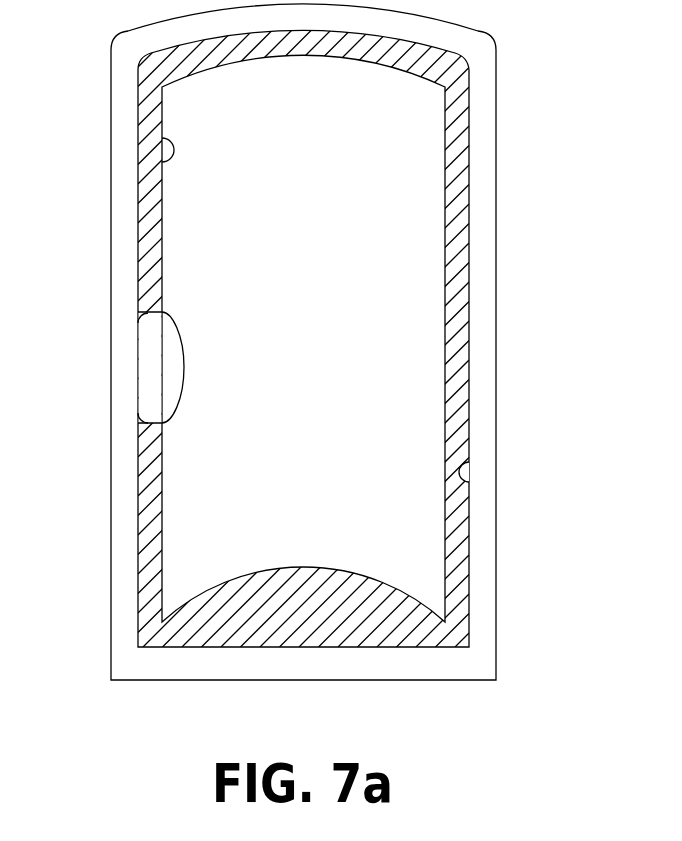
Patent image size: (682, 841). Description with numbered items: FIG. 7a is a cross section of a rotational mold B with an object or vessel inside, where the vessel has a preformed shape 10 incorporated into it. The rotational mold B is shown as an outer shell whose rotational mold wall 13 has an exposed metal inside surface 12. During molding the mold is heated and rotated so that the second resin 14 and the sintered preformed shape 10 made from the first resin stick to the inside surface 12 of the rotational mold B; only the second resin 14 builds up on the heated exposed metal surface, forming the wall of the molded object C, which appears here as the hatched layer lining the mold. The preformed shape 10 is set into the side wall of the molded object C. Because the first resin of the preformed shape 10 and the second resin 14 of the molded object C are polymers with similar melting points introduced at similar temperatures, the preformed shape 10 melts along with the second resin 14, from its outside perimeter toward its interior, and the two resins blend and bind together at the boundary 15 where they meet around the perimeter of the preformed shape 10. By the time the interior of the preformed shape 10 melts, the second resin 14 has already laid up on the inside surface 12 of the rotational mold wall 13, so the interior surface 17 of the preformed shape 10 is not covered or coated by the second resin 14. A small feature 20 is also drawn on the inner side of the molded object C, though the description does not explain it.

The rotational mold B is at (497, 218).
The molded object C is at (469, 129).
The second resin 14 is at (148, 514).
The preformed shape 10 is at (138, 375).
The boundary 15 is at (138, 323).
The interior surface 17 is at (178, 370).
The protrusion on inner wall 20 is at (162, 138).
The inside surface 12 is at (469, 482).
The rotational mold wall 13 is at (482, 397).